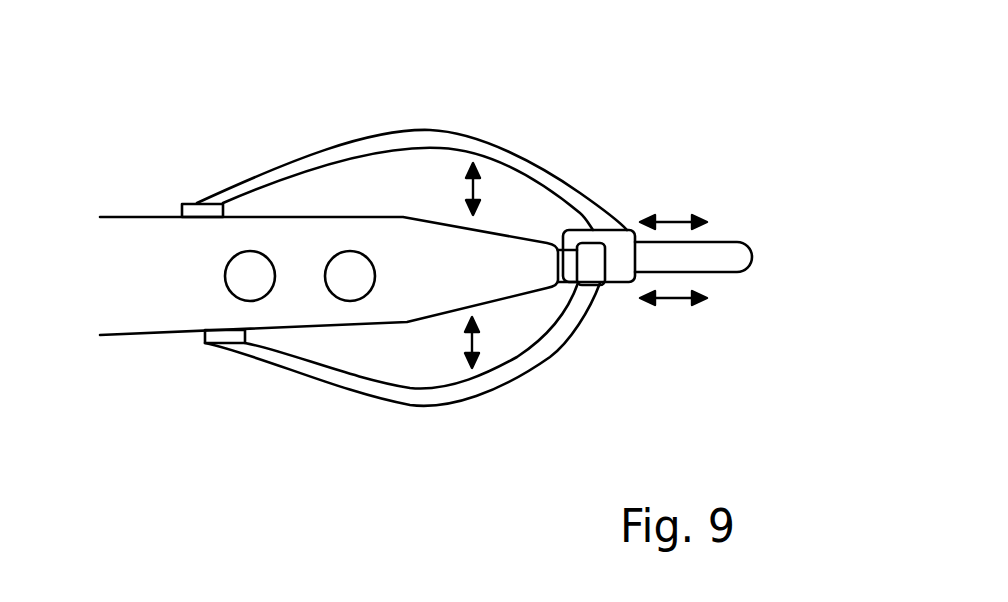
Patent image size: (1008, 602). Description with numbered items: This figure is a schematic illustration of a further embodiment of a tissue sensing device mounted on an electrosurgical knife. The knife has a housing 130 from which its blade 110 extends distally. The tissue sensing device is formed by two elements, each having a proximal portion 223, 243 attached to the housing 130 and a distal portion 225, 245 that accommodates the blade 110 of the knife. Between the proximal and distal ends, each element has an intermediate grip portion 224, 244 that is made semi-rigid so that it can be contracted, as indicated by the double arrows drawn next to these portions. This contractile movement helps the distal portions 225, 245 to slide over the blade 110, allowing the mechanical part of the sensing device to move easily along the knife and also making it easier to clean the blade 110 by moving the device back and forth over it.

The housing 130 is at (138, 297).
The proximal portion 223 is at (198, 205).
The proximal portion 243 is at (228, 336).
The grip portion 224 is at (443, 133).
The grip portion 244 is at (453, 403).
The distal portion 225 is at (623, 242).
The distal portion 245 is at (590, 272).
The blade 110 is at (728, 252).